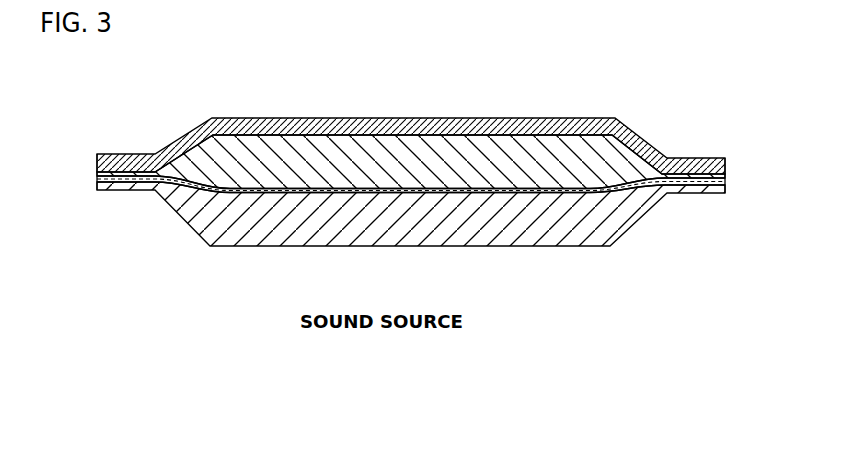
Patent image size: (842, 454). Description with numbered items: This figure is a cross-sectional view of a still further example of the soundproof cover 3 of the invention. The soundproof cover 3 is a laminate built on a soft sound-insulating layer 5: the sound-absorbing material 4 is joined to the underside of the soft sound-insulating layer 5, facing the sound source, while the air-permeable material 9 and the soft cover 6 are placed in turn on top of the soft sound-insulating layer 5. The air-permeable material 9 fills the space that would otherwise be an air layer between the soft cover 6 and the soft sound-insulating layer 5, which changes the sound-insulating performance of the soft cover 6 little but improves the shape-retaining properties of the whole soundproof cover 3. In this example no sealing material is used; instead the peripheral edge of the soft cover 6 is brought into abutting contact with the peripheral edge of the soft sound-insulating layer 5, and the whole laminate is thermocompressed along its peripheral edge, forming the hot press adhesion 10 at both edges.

The soundproof cover 3 is at (413, 163).
The sound-absorbing material 4 is at (633, 228).
The soft sound-insulating layer 5 is at (548, 197).
The soft cover 6 is at (642, 140).
The air-permeable material 9 is at (547, 142).
The hot press adhesion 10 is at (94, 156).